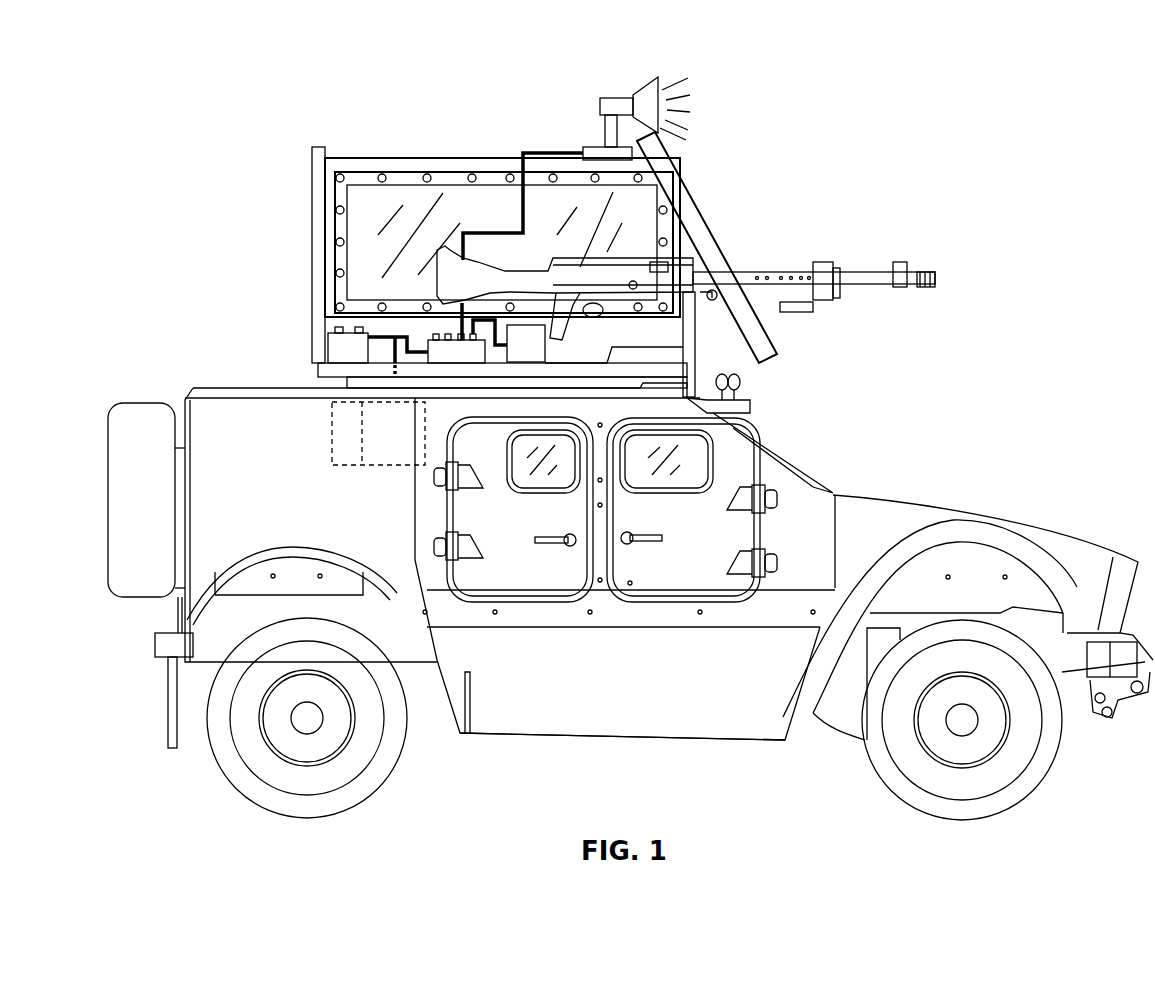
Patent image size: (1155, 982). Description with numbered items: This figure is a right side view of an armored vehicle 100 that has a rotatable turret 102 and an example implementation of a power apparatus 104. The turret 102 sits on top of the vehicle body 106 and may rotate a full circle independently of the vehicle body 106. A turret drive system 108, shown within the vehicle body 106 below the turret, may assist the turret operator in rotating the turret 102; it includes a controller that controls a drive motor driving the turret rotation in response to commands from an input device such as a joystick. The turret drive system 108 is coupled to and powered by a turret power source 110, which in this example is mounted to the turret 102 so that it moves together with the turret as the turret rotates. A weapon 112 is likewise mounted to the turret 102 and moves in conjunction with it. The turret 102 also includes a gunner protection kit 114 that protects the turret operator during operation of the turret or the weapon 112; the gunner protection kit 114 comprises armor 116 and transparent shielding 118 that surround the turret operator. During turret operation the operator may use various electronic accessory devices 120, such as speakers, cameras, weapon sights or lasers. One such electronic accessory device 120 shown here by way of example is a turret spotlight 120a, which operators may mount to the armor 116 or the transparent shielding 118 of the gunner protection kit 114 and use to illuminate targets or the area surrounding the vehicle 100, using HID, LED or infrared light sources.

The armored vehicle 100 is at (1057, 530).
The rotatable turret 102 is at (315, 373).
The power apparatus 104 is at (467, 333).
The vehicle body 106 is at (530, 712).
The turret drive system 108 is at (332, 430).
The turret power source 110 is at (378, 351).
The weapon 112 is at (782, 272).
The gunner protection kit 114 is at (297, 140).
The armor 116 is at (382, 157).
The transparent shielding 118 is at (502, 195).
The electronic accessory device 120 is at (526, 343).
The turret spotlight 120a is at (597, 102).